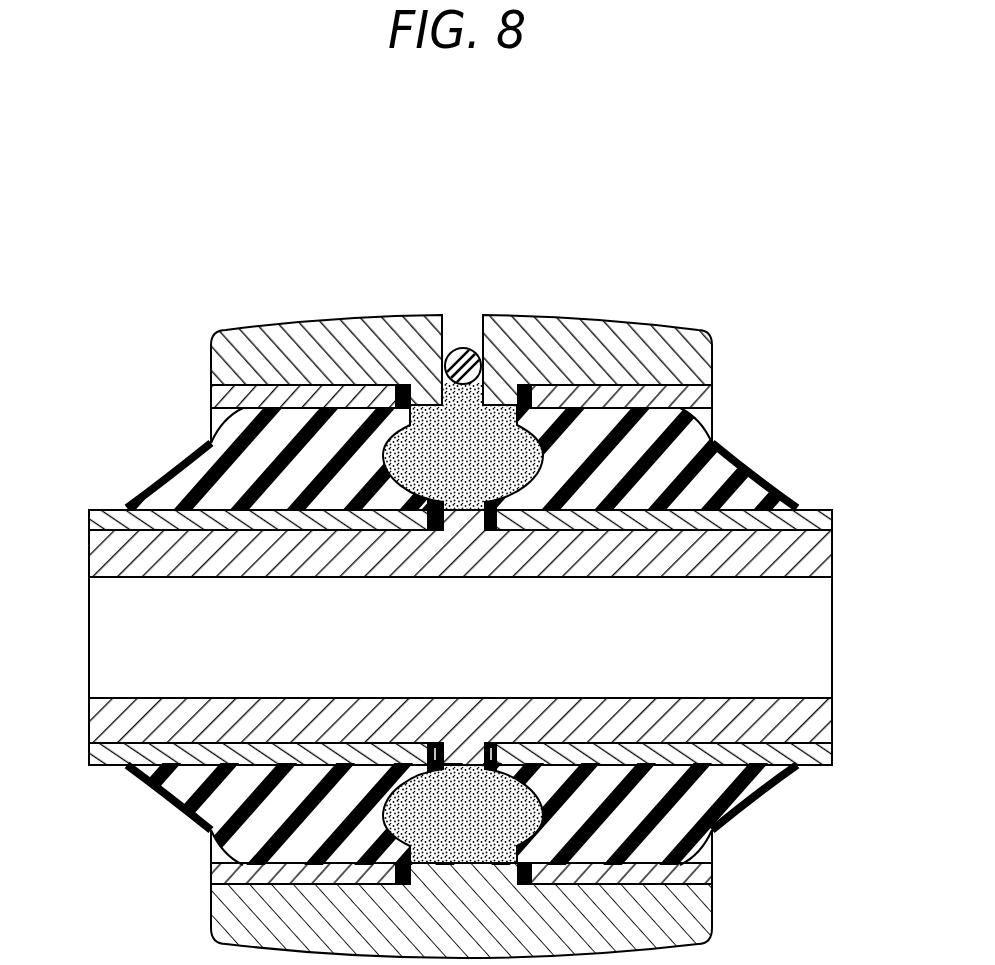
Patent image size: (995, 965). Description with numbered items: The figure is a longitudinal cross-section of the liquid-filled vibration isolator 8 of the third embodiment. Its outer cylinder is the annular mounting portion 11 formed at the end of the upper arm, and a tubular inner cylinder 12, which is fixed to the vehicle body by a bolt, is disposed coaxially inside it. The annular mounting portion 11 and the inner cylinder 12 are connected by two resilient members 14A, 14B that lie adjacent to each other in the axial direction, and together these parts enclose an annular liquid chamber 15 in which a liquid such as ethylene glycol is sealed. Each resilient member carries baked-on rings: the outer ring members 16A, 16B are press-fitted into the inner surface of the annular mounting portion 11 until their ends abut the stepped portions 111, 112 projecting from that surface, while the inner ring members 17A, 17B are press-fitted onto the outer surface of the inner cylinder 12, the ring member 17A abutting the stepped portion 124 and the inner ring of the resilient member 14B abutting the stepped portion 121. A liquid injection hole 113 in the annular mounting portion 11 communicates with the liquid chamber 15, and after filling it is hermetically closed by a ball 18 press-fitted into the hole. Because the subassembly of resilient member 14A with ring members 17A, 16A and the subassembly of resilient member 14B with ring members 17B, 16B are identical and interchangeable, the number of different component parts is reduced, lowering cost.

The liquid-filled vibration isolator 8 is at (465, 550).
The annular mounting portion 11 is at (489, 550).
The stepped portion 111 is at (380, 372).
The stepped portion 112 is at (569, 386).
The liquid injection hole 113 is at (442, 340).
The ball 18 is at (484, 358).
The ring member 16A is at (312, 400).
The ring member 16B is at (681, 398).
The resilient member 14A is at (158, 487).
The resilient member 14B is at (753, 481).
The annular liquid chamber 15 is at (482, 474).
The inner cylinder 12 is at (460, 637).
The stepped portion 121 is at (498, 760).
The stepped portion 124 is at (437, 757).
The ring member 17A is at (337, 753).
The ring member 17B is at (640, 753).